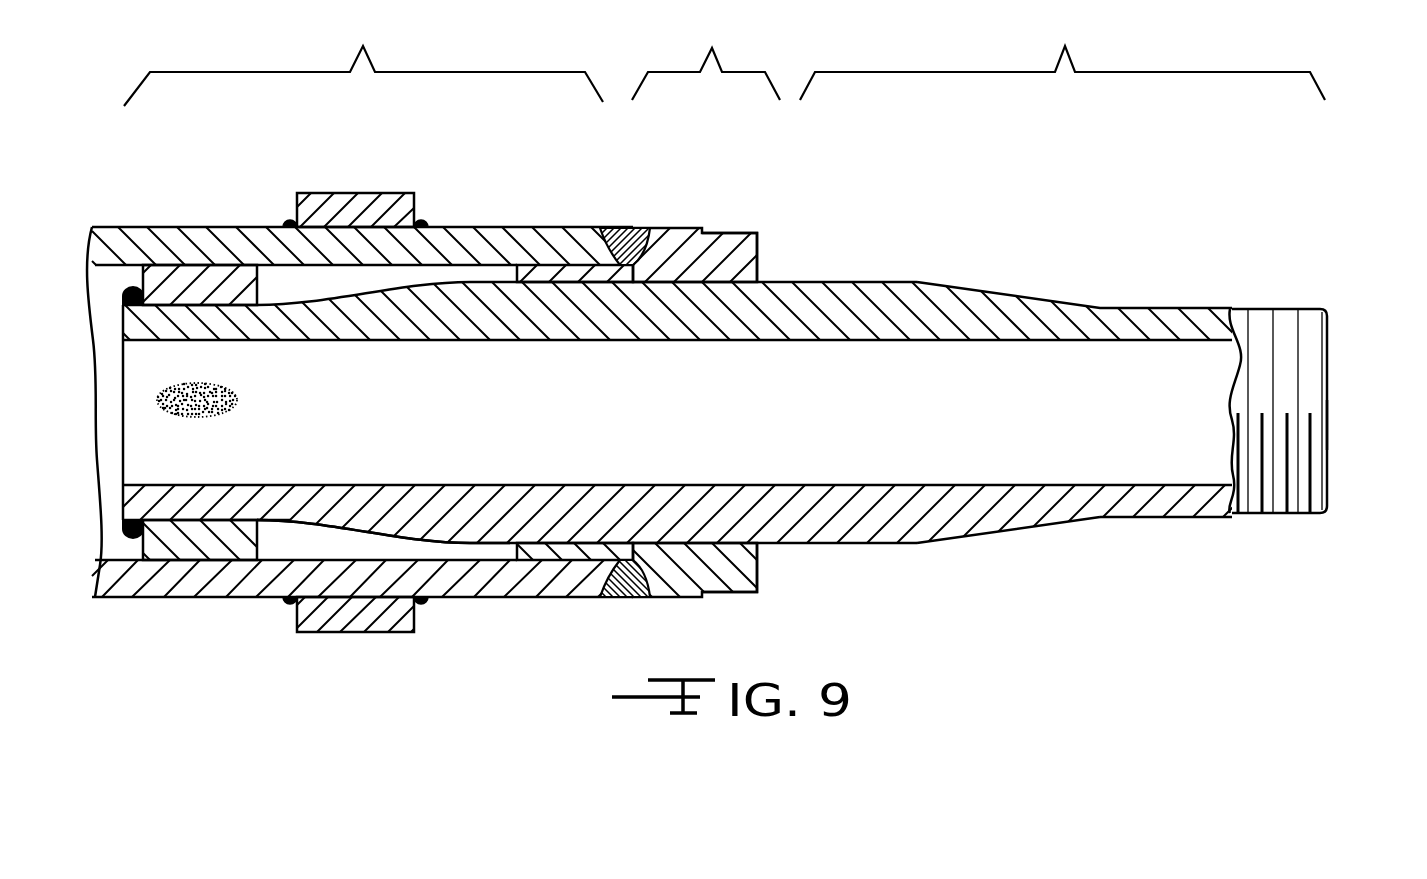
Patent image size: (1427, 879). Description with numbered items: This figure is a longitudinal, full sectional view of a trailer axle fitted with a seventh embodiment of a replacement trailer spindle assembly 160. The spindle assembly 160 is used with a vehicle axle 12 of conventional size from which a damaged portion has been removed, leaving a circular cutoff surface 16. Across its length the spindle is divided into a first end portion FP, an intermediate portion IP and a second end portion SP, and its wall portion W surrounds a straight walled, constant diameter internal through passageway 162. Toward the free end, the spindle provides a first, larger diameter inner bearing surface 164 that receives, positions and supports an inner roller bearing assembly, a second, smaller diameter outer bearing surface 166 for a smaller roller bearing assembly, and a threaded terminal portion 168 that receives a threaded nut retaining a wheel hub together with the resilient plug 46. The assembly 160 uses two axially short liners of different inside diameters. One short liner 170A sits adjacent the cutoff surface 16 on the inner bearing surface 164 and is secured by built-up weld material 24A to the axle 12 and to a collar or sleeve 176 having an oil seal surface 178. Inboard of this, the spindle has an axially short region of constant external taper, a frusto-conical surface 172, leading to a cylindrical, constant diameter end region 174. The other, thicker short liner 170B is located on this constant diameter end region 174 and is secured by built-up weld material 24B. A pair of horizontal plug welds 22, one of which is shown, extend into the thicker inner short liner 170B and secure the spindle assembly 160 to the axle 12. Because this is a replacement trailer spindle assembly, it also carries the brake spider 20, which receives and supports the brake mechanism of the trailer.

The vehicle axle 12 is at (452, 242).
The brake spider 20 is at (352, 192).
The plug welds 22 is at (200, 420).
The built-up weld material 24A is at (627, 228).
The built-up weld material 24B is at (133, 538).
The circular cutoff surface 16 is at (610, 582).
The resilient plug 46 is at (1327, 427).
The replacement trailer spindle assembly 160 is at (928, 268).
The internal through passageway 162 is at (660, 403).
The inner bearing surface 164 is at (843, 282).
The outer bearing surface 166 is at (1170, 308).
The threaded terminal portion 168 is at (1280, 308).
The short liner 170A is at (550, 272).
The short liner 170B is at (192, 278).
The frusto-conical surface 172 is at (330, 535).
The constant diameter end region 174 is at (270, 525).
The collar or sleeve 176 is at (672, 236).
The oil seal surface 178 is at (720, 234).
The wall portion W is at (490, 522).
The second end portion SP is at (363, 60).
The intermediate portion IP is at (706, 57).
The first end portion FP is at (1062, 58).